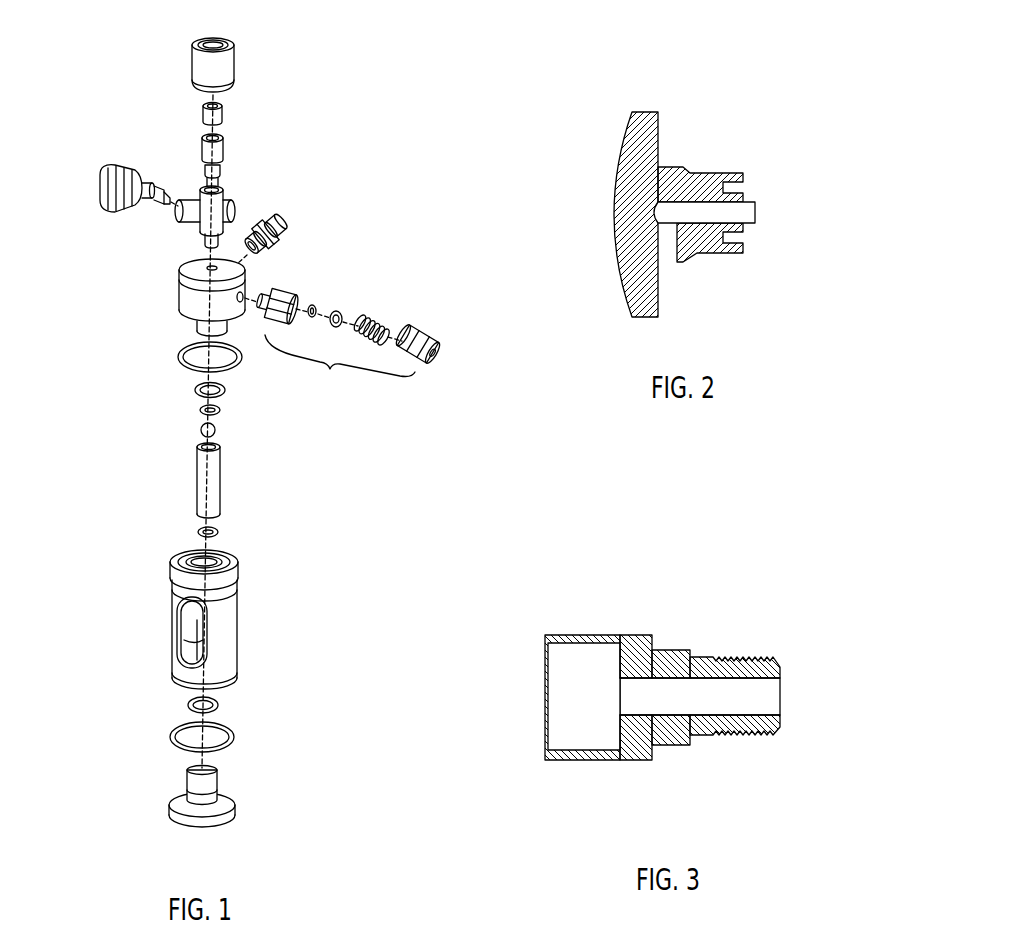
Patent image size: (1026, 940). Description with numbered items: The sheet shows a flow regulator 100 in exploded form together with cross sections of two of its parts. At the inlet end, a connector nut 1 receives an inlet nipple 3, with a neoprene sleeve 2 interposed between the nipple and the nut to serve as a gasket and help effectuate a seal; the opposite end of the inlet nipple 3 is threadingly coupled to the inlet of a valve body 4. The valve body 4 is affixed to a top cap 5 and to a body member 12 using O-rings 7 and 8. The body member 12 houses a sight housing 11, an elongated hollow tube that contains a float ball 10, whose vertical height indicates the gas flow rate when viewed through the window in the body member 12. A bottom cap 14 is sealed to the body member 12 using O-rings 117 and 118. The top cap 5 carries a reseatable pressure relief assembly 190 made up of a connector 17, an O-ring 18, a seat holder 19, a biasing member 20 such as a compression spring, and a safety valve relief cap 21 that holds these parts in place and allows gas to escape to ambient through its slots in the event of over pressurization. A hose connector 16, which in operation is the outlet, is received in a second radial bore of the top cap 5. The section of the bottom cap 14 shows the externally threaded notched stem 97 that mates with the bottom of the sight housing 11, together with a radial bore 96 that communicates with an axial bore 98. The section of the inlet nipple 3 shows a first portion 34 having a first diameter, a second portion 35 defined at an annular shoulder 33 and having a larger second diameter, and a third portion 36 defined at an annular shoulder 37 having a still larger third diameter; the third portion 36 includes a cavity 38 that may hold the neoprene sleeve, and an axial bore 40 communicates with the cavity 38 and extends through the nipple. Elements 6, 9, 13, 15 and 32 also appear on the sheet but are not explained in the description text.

In FIG. 1, the flow regulator 100 is at (387, 118).
In FIG. 1, the connector nut 1 is at (240, 60).
In FIG. 1, the neoprene sleeve 2 is at (222, 108).
In FIG. 1, the inlet nipple 3 is at (225, 152).
In FIG. 3, the inlet nipple 3 is at (655, 689).
In FIG. 1, the valve body 4 is at (227, 205).
In FIG. 1, the top cap 5 is at (178, 272).
In FIG. 1, the body 6 is at (178, 298).
In FIG. 1, the O-ring 7 is at (177, 357).
In FIG. 1, the O-ring 8 is at (195, 390).
In FIG. 1, the O-ring 9 is at (198, 412).
In FIG. 1, the float ball 10 is at (202, 431).
In FIG. 1, the sight housing 11 is at (195, 481).
In FIG. 1, the body member 12 is at (170, 573).
In FIG. 1, the window 13 is at (222, 622).
In FIG. 1, the bottom cap 14 is at (167, 793).
In FIG. 2, the bottom cap 14 is at (712, 177).
In FIG. 1, the knob 15 is at (100, 182).
In FIG. 1, the hose connector 16 is at (288, 226).
In FIG. 1, the connector 17 is at (288, 297).
In FIG. 1, the O-ring 18 is at (313, 306).
In FIG. 1, the seat holder 19 is at (339, 312).
In FIG. 1, the biasing member 20 is at (382, 328).
In FIG. 1, the safety valve relief cap 21 is at (428, 340).
In FIG. 1, the pressure relief assembly 190 is at (330, 347).
In FIG. 1, the O-ring 117 is at (235, 737).
In FIG. 1, the O-ring 118 is at (220, 705).
In FIG. 2, the radial bore 96 is at (677, 240).
In FIG. 2, the notched stem 97 is at (738, 167).
In FIG. 2, the axial bore 98 is at (692, 202).
In FIG. 3, the thread 32 is at (753, 737).
In FIG. 3, the annular shoulder 33 is at (690, 741).
In FIG. 3, the first portion 34 is at (718, 656).
In FIG. 3, the second portion 35 is at (670, 650).
In FIG. 3, the third portion 36 is at (620, 633).
In FIG. 3, the annular shoulder 37 is at (652, 758).
In FIG. 3, the cavity 38 is at (567, 722).
In FIG. 3, the axial bore 40 is at (760, 712).